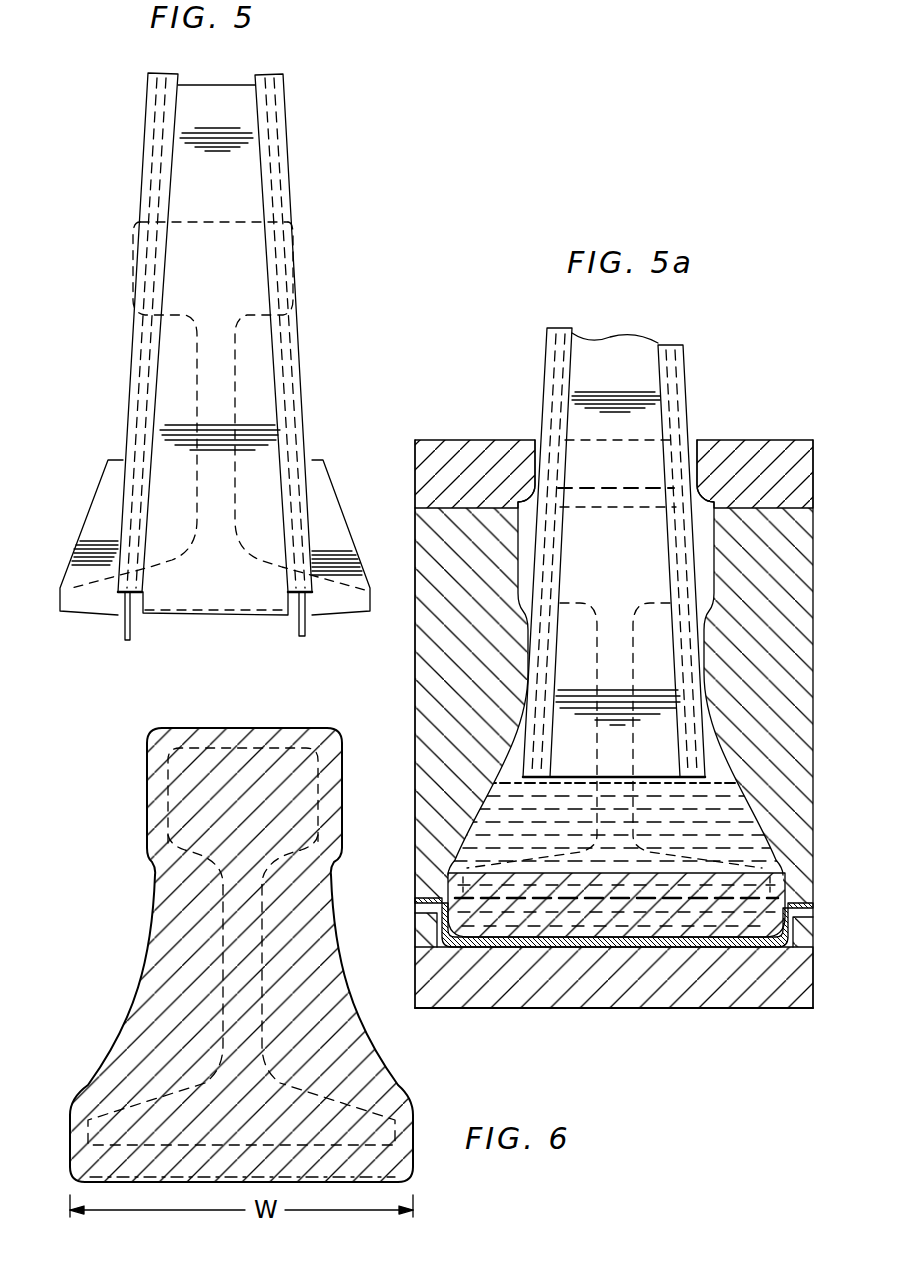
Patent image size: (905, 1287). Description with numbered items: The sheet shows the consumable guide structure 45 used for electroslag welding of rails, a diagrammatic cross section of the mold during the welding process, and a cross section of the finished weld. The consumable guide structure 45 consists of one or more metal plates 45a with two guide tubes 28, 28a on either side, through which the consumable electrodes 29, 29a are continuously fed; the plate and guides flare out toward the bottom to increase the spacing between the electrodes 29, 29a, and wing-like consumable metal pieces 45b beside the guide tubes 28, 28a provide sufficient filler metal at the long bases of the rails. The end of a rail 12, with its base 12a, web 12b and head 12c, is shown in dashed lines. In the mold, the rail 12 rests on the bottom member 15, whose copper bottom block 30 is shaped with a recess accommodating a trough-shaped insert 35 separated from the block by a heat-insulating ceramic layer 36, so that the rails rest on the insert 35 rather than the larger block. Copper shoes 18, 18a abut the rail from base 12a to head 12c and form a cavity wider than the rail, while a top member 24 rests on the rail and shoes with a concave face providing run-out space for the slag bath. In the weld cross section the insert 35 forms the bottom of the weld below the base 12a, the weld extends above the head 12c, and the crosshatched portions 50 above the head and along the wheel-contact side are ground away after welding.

In FIG. 5, the rail 12 is at (147, 268).
In FIG. 5a, the rail 12 is at (596, 508).
In FIG. 6, the rail 12 is at (166, 1098).
In FIG. 6, the rail base 12a is at (396, 1107).
In FIG. 6, the rail web 12b is at (225, 986).
In FIG. 6, the rail head 12c is at (182, 828).
In FIG. 5a, the bottom member 15 is at (741, 1008).
In FIG. 5a, the copper shoe 18 is at (785, 525).
In FIG. 5a, the copper shoe 18a is at (416, 712).
In FIG. 5a, the top member 24 is at (768, 447).
In FIG. 5, the guide tube 28 is at (138, 363).
In FIG. 5, the guide tube 28a is at (302, 416).
In FIG. 5, the electrode 29 is at (125, 633).
In FIG. 5, the electrode 29a is at (305, 636).
In FIG. 5a, the bottom block 30 is at (708, 990).
In FIG. 5a, the trough-shaped insert 35 is at (598, 937).
In FIG. 5a, the ceramic layer 36 is at (655, 947).
In FIG. 5, the consumable guide structure 45 is at (283, 345).
In FIG. 5a, the consumable guide structure 45 is at (683, 413).
In FIG. 5, the metal plate 45a is at (255, 375).
In FIG. 5, the consumable metal pieces 45b is at (95, 496).
In FIG. 6, the removed weld portions 50 is at (147, 775).